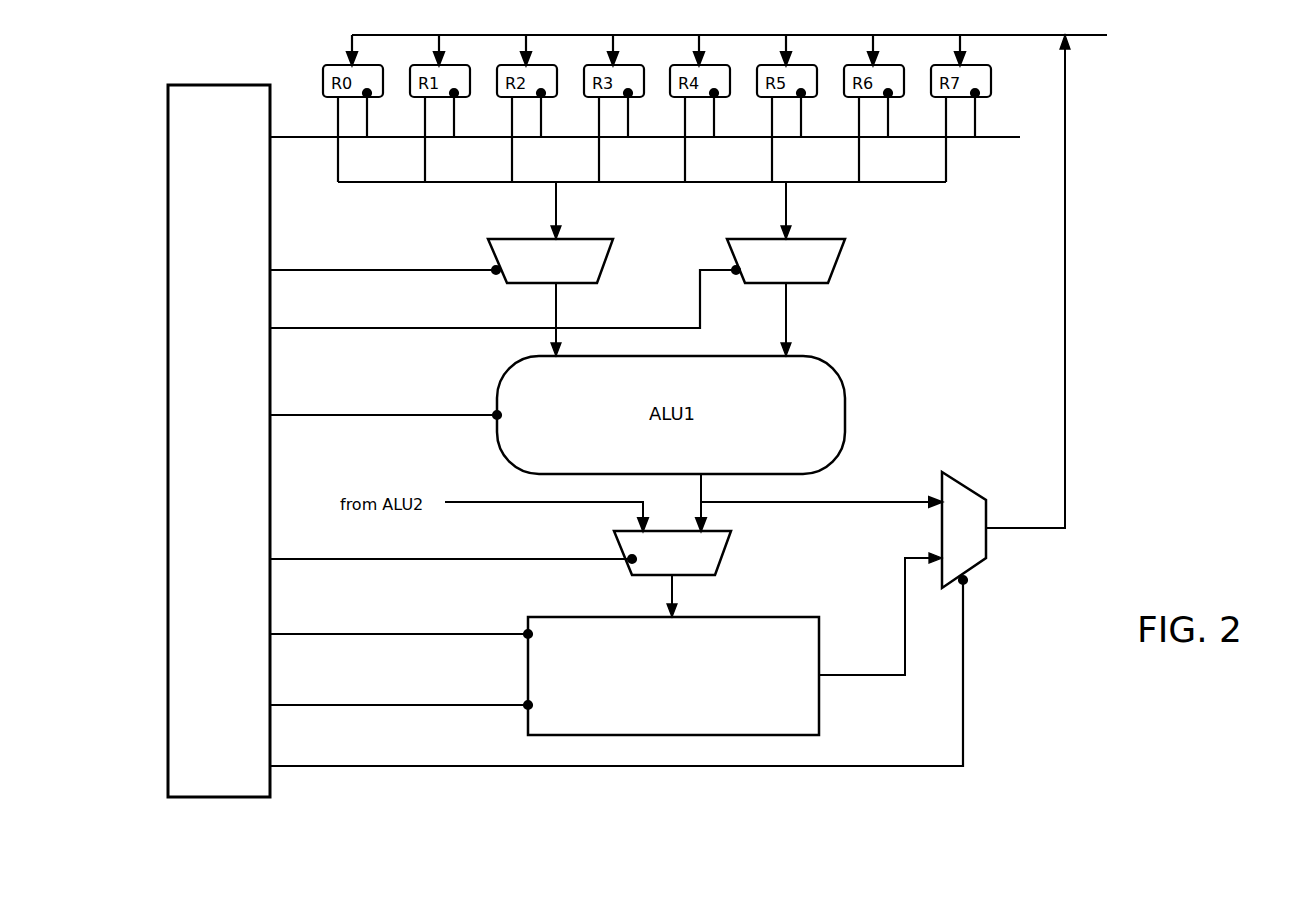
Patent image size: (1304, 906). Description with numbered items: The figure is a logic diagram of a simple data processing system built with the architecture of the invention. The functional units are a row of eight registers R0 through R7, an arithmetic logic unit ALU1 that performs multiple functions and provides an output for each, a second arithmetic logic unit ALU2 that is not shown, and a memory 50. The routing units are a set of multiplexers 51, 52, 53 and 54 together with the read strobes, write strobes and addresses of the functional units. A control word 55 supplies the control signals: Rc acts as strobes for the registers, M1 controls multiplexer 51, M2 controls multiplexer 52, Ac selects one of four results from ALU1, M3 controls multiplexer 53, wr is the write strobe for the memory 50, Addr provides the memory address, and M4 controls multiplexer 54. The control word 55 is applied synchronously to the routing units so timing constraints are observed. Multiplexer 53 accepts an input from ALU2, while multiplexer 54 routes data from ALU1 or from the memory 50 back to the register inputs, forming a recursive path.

The memory 50 is at (735, 644).
The multiplexer 51 is at (611, 267).
The multiplexer 52 is at (841, 267).
The multiplexer 53 is at (724, 557).
The multiplexer 54 is at (955, 477).
The control word 55 is at (222, 83).